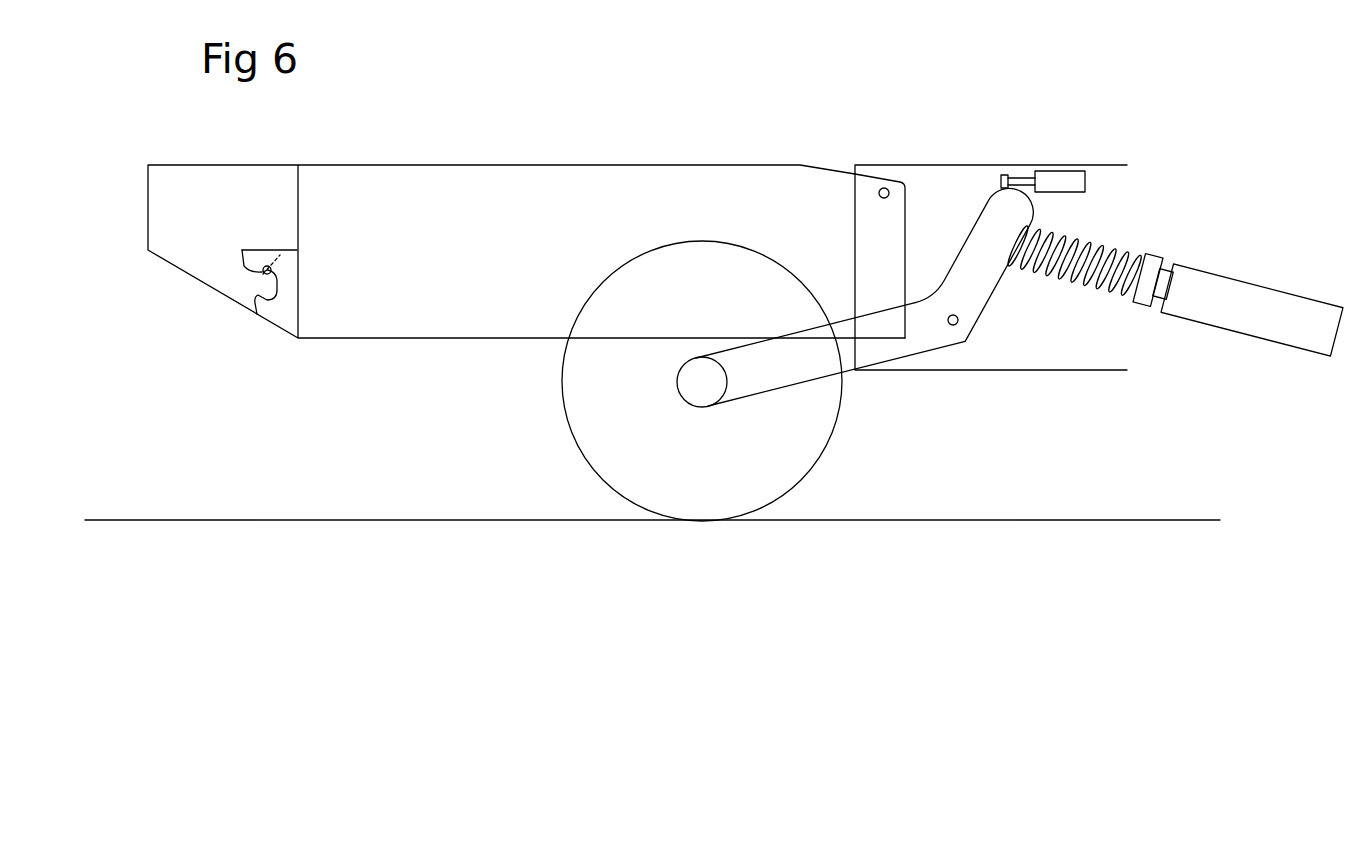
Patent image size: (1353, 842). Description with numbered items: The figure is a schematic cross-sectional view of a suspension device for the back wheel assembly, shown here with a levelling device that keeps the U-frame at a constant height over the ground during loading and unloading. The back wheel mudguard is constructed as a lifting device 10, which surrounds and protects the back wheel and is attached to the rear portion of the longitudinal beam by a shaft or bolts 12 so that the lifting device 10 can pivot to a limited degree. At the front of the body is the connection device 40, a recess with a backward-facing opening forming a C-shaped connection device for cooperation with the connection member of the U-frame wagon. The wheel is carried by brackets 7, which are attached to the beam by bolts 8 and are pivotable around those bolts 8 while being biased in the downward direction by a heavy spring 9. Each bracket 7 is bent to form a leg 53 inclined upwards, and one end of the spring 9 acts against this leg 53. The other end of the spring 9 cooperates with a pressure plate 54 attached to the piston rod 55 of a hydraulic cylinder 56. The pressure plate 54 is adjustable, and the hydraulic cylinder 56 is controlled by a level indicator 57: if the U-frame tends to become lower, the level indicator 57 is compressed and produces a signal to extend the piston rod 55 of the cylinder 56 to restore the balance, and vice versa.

The lifting device 10 is at (689, 141).
The shaft or bolts 12 is at (883, 187).
The connection device 40 is at (251, 323).
The brackets 7 is at (807, 365).
The leg 53 is at (967, 232).
The bolts 8 is at (953, 326).
The level indicator 57 is at (1065, 180).
The spring 9 is at (1070, 289).
The piston rod 55 is at (1128, 292).
The pressure plate 54 is at (1145, 310).
The hydraulic cylinder 56 is at (1268, 342).